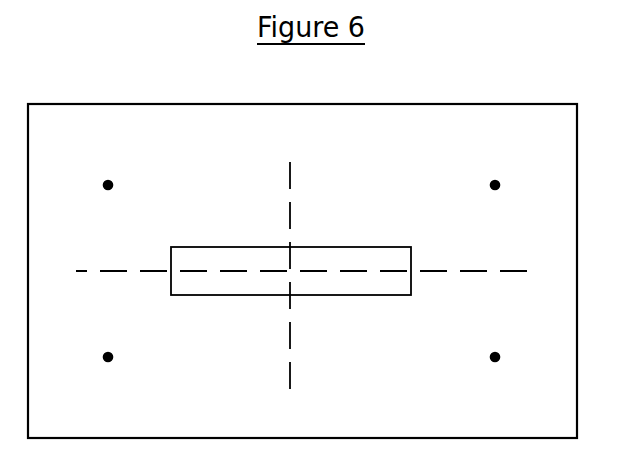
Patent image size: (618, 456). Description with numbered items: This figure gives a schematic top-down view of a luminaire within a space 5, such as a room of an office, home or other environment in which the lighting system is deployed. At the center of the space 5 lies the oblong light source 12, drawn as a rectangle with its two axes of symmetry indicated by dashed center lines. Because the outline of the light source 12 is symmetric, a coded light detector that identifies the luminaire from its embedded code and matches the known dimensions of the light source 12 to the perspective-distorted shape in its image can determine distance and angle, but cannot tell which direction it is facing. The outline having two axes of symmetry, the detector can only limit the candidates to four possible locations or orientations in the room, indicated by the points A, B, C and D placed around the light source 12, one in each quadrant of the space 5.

The space 5 is at (518, 115).
The light source 12 is at (343, 248).
The candidate location A is at (118, 185).
The candidate location B is at (118, 357).
The candidate location C is at (505, 357).
The candidate location D is at (506, 185).